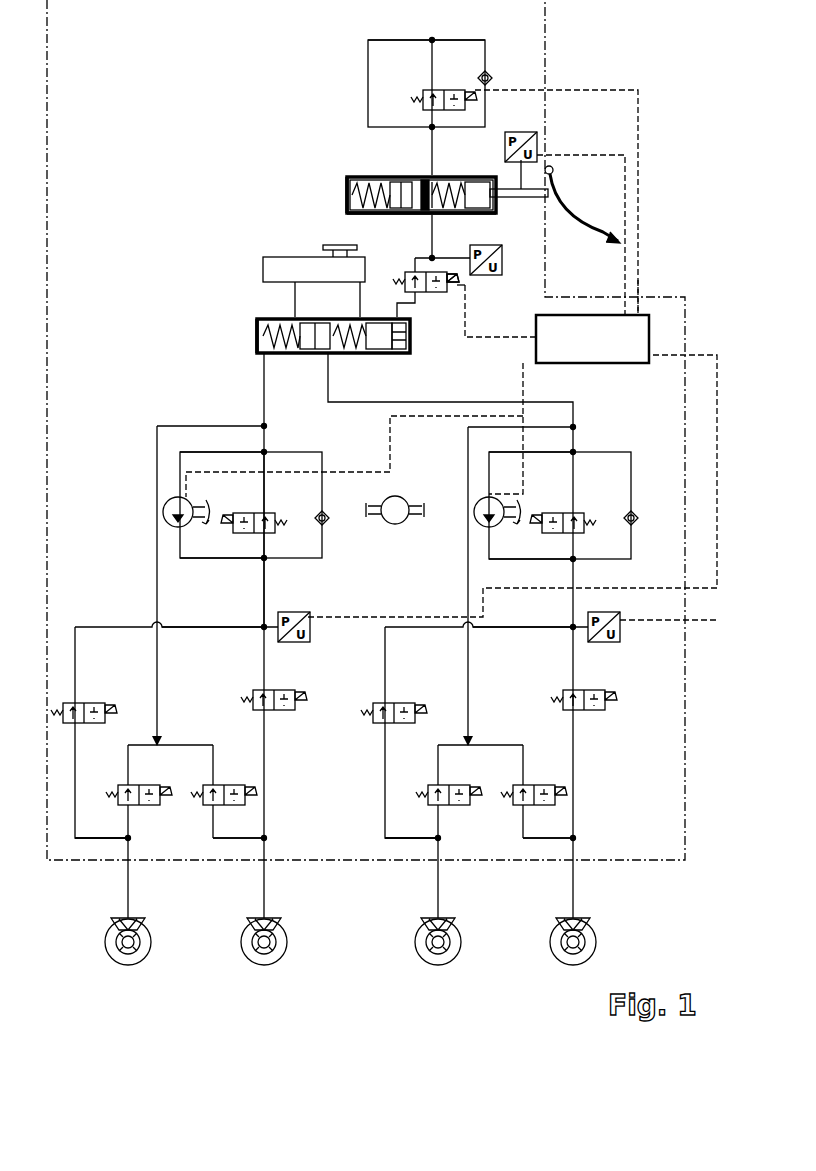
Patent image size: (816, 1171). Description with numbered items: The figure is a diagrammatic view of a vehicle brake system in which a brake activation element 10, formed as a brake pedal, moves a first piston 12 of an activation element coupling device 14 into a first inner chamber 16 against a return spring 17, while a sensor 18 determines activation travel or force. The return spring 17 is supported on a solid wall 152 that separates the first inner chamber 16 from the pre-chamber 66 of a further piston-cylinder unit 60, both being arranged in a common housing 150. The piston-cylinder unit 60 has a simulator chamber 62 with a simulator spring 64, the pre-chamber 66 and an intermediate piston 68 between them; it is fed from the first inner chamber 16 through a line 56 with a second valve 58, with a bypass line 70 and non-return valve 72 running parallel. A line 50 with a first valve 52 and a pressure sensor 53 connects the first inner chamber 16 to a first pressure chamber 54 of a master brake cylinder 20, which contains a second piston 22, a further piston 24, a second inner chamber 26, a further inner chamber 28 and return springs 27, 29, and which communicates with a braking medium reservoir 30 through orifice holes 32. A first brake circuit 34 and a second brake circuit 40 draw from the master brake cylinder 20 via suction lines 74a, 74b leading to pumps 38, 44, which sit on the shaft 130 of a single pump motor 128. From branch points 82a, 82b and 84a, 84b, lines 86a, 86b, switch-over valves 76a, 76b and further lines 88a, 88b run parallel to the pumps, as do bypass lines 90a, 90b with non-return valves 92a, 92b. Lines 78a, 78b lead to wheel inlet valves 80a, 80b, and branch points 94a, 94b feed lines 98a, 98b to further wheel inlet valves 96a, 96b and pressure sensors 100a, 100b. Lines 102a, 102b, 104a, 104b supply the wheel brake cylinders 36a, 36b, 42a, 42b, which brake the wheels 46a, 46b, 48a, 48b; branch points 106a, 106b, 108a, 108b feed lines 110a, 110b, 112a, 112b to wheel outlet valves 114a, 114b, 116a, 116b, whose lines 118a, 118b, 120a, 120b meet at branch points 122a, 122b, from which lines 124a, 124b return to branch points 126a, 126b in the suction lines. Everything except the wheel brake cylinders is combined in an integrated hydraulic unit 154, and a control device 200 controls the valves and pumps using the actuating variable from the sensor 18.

The brake activation element 10 is at (567, 208).
The first piston 12 is at (478, 178).
The activation element coupling device 14 is at (483, 219).
The first inner chamber 16 is at (445, 178).
The return spring 17 is at (450, 215).
The sensor 18 is at (537, 140).
The master brake cylinder 20 is at (253, 333).
The second piston 22 is at (400, 355).
The further piston 24 is at (315, 355).
The second inner chamber 26 is at (380, 355).
The return spring 27 is at (352, 355).
The further inner chamber 28 is at (262, 352).
The return spring 29 is at (280, 355).
The braking medium reservoir 30 is at (265, 262).
The orifice hole 32 is at (360, 303).
The first brake circuit 34 is at (379, 811).
The first wheel brake cylinder 36a is at (557, 920).
The second wheel brake cylinder 36b is at (248, 920).
The first pump 38 is at (474, 506).
The second brake circuit 40 is at (277, 792).
The first wheel brake cylinder 42a is at (422, 920).
The second wheel brake cylinder 42b is at (112, 920).
The second pump 44 is at (164, 506).
The wheel 46a is at (551, 948).
The wheel 46b is at (242, 948).
The wheel 48a is at (416, 948).
The wheel 48b is at (106, 948).
The line 50 is at (408, 278).
The first valve 52 is at (432, 292).
The pressure sensor 53 is at (486, 276).
The first pressure chamber 54 is at (408, 352).
The line 56 is at (368, 82).
The second valve 58 is at (426, 88).
The further piston-cylinder unit 60 is at (343, 207).
The simulator chamber 62 is at (362, 176).
The simulator spring 64 is at (345, 181).
The pre-chamber 66 is at (392, 215).
The intermediate piston 68 is at (396, 178).
The bypass line 70 is at (462, 40).
The non-return valve 72 is at (491, 75).
The suction line 74a is at (505, 402).
The suction line 74b is at (266, 414).
The switch-over valve 76a is at (556, 512).
The switch-over valve 76b is at (246, 512).
The line 78a is at (575, 602).
The line 78b is at (266, 602).
The wheel inlet valve 80a is at (590, 711).
The wheel inlet valve 80b is at (280, 711).
The branch point 82a is at (573, 452).
The branch point 82b is at (264, 452).
The branch point 84a is at (575, 561).
The branch point 84b is at (266, 560).
The line 86a is at (575, 491).
The line 86b is at (266, 491).
The further line 88a is at (571, 556).
The further line 88b is at (262, 556).
The bypass line 90a is at (631, 475).
The bypass line 90b is at (322, 475).
The non-return valve 92a is at (635, 513).
The non-return valve 92b is at (326, 513).
The branch point 94a is at (573, 627).
The branch point 94b is at (264, 627).
The further wheel inlet valve 96a is at (396, 702).
The further wheel inlet valve 96b is at (86, 702).
The line 98a is at (523, 628).
The line 98b is at (213, 628).
The pressure sensor 100a is at (620, 627).
The pressure sensor 100b is at (308, 627).
The line 102a is at (575, 886).
The line 102b is at (266, 886).
The line 104a is at (440, 886).
The line 104b is at (130, 886).
The branch point 106a is at (575, 838).
The branch point 106b is at (266, 838).
The branch point 108a is at (440, 840).
The branch point 108b is at (130, 840).
The line 110a is at (525, 822).
The line 110b is at (215, 822).
The line 112a is at (440, 826).
The line 112b is at (130, 826).
The wheel outlet valve 114a is at (548, 772).
The wheel outlet valve 114b is at (238, 772).
The wheel outlet valve 116a is at (432, 784).
The wheel outlet valve 116b is at (122, 784).
The line 118a is at (510, 745).
The line 118b is at (200, 745).
The line 120a is at (445, 745).
The line 120b is at (135, 745).
The branch point 122a is at (470, 744).
The branch point 122b is at (160, 744).
The line 124a is at (466, 575).
The line 124b is at (155, 544).
The branch point 126a is at (573, 427).
The branch point 126b is at (264, 426).
The pump motor 128 is at (398, 496).
The shaft 130 is at (413, 517).
The common housing 150 is at (348, 172).
The solid wall 152 is at (425, 215).
The hydraulic unit 154 is at (640, 290).
The control device 200 is at (649, 328).